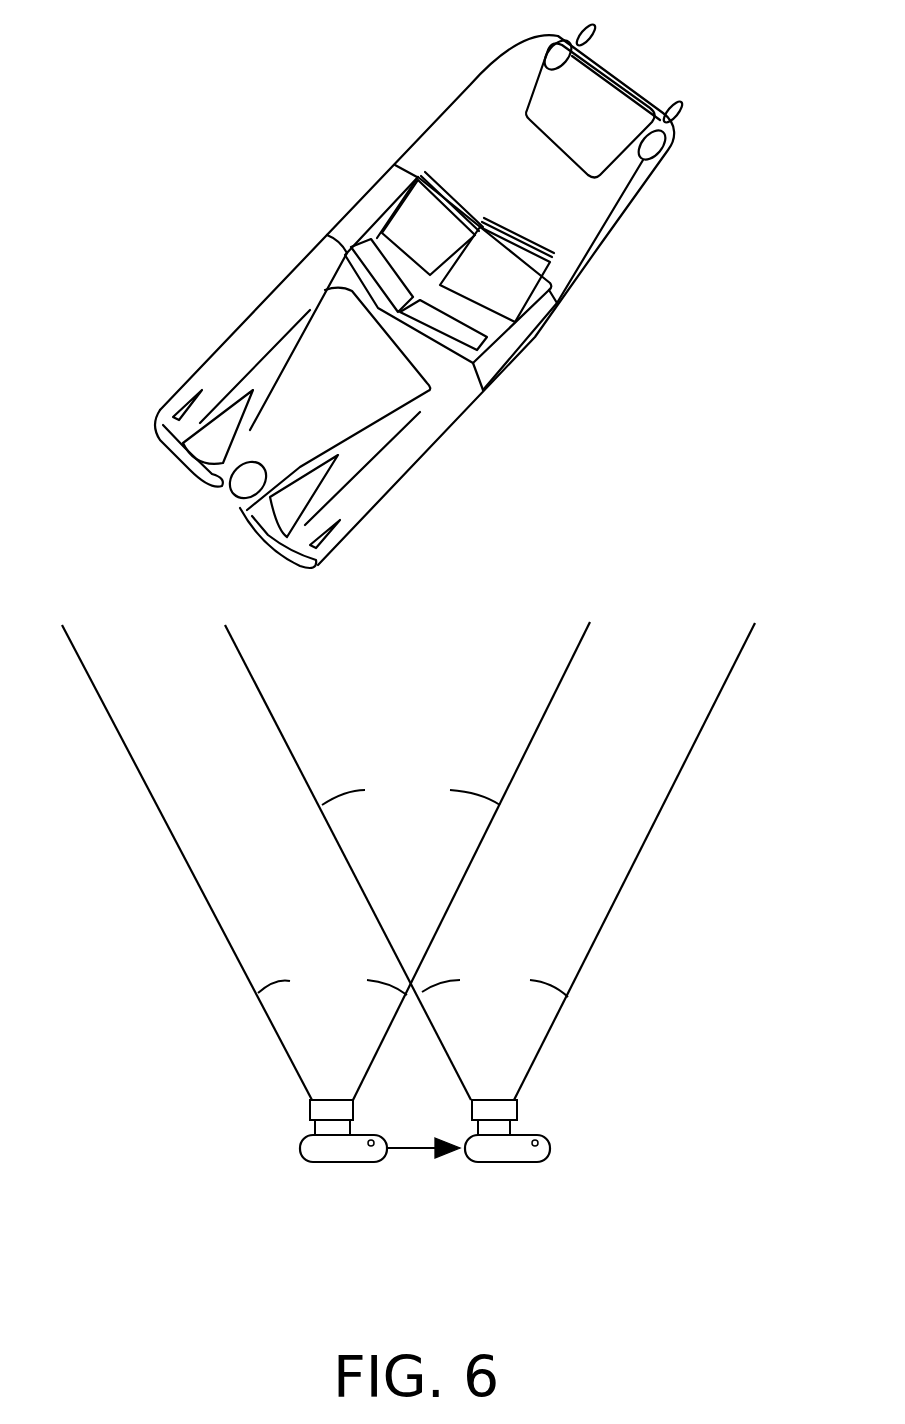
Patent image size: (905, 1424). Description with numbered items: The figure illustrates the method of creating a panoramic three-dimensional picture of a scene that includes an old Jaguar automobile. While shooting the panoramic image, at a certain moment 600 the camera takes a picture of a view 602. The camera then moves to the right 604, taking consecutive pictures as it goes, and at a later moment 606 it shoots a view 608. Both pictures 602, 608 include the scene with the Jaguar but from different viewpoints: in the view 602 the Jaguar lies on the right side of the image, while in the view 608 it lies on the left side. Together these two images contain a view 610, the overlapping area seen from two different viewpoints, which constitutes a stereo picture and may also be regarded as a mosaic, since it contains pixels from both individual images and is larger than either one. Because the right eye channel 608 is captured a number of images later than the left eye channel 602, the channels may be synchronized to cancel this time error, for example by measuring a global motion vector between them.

The moment 600 is at (300, 1148).
The view 602 is at (332, 980).
The camera movement to the right 604 is at (410, 1148).
The moment 606 is at (550, 1148).
The view 608 is at (495, 980).
The view 610 is at (411, 790).